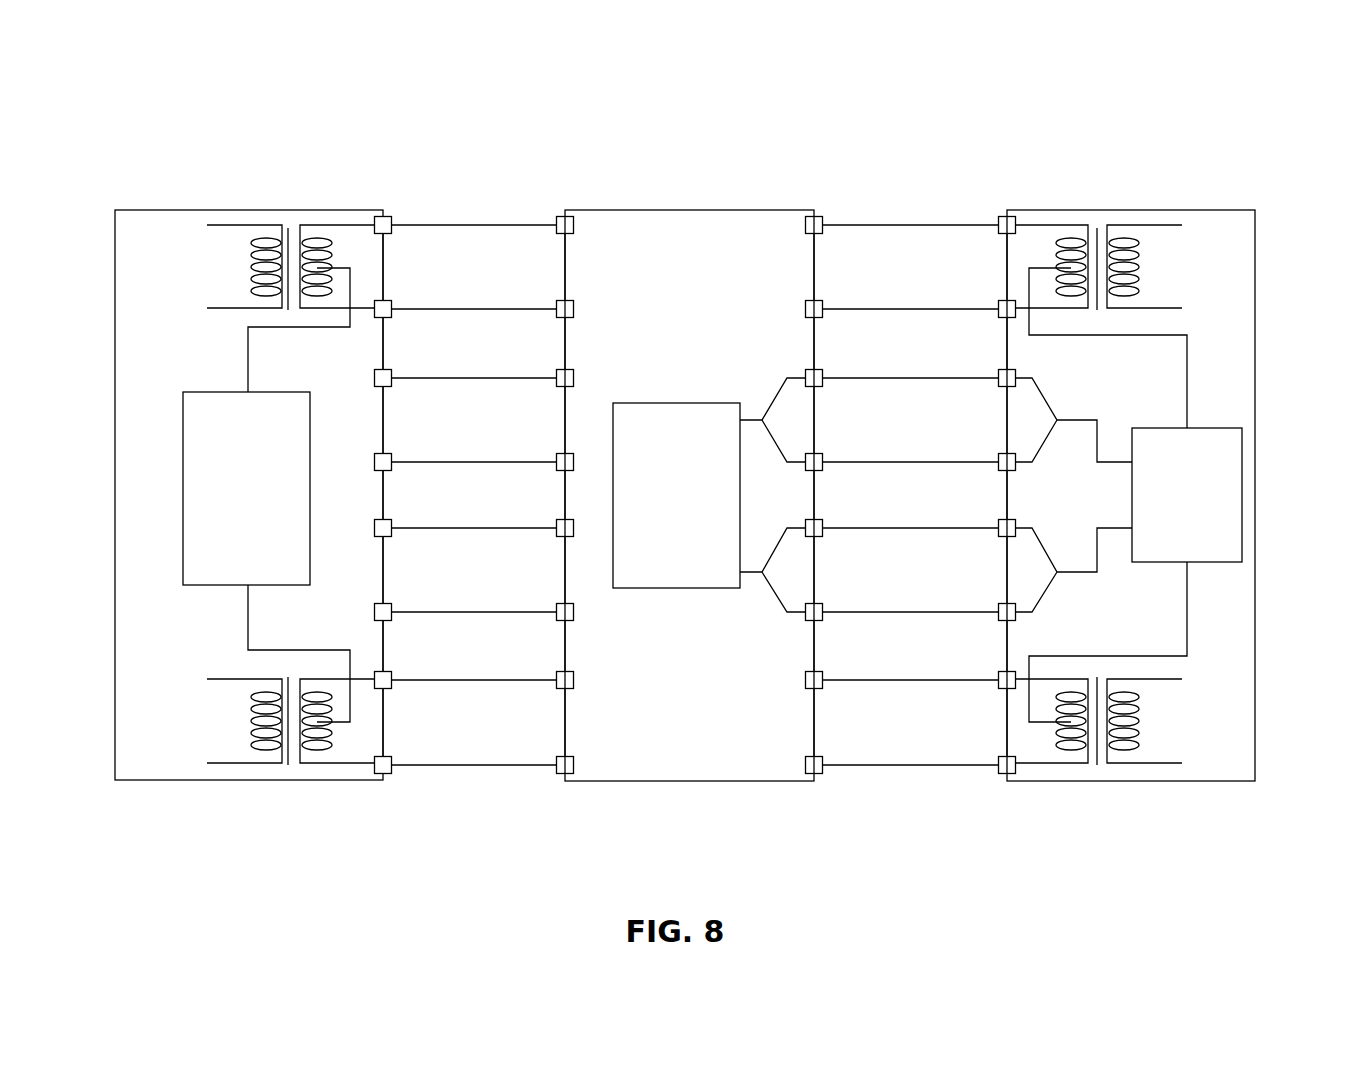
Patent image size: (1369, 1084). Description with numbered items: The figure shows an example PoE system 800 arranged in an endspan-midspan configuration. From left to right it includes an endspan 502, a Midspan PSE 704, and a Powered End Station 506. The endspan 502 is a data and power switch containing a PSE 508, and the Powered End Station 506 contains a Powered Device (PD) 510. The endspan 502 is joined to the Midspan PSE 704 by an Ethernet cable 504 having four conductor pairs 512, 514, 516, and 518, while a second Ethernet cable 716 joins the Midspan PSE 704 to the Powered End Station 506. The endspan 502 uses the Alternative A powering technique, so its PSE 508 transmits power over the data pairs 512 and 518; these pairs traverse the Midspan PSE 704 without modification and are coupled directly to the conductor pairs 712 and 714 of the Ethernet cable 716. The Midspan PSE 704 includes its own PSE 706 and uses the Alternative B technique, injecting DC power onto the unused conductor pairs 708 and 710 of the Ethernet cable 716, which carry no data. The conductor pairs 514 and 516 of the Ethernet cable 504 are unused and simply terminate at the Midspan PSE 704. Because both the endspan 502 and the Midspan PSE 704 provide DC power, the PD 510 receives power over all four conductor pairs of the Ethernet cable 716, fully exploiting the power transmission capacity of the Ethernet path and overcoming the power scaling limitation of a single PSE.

The PoE system 800 is at (1262, 128).
The endspan 502 is at (258, 782).
The Ethernet cable 504 is at (443, 118).
The Powered End Station 506 is at (1127, 783).
The PSE 508 is at (183, 477).
The Powered Device (PD) 510 is at (1243, 500).
The conductor pair 512 is at (467, 220).
The conductor pair 514 is at (467, 375).
The conductor pair 516 is at (467, 525).
The conductor pair 518 is at (486, 768).
The Midspan PSE 704 is at (685, 783).
The PSE 706 is at (672, 590).
The conductor pair 708 is at (898, 376).
The conductor pair 710 is at (898, 526).
The conductor pair 712 is at (898, 220).
The conductor pair 714 is at (896, 768).
The Ethernet cable 716 is at (900, 118).